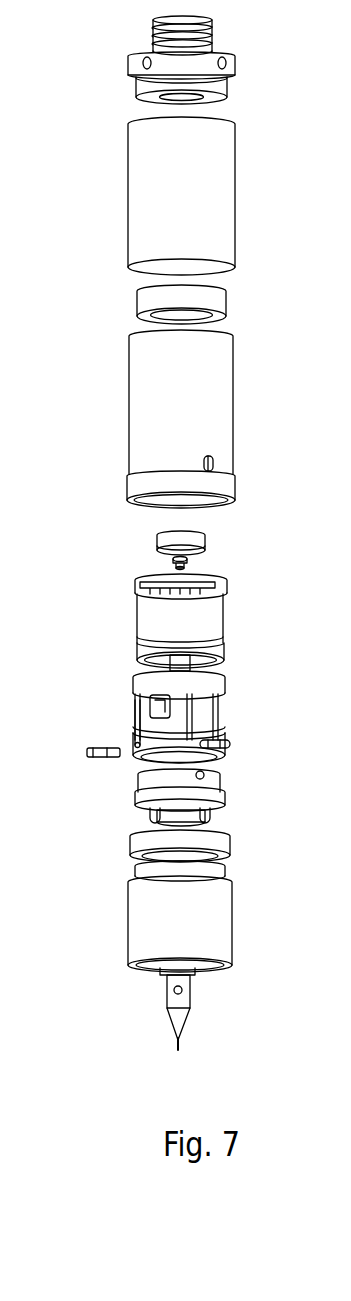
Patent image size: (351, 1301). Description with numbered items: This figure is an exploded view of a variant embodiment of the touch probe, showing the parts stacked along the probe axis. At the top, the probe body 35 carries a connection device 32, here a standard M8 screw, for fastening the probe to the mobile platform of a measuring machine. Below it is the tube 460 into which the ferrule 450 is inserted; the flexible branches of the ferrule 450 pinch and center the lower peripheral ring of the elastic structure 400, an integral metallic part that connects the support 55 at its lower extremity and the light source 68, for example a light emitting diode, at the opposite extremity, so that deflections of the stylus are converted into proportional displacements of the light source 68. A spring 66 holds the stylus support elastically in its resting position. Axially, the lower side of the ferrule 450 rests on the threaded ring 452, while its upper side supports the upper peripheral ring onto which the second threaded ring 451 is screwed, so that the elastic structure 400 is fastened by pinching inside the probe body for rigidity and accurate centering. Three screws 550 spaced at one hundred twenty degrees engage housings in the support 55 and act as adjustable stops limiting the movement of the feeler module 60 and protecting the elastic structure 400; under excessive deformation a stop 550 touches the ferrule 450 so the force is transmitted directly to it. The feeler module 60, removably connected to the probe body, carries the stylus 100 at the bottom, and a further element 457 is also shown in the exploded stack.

The connection device 32 is at (207, 23).
The probe body 35 is at (135, 193).
The second threaded ring 451 is at (217, 297).
The tube 460 is at (157, 364).
The spring 66 is at (203, 540).
The light source 68 is at (165, 559).
The elastic structure 400 is at (205, 629).
The ferrule 450 is at (155, 686).
The post 457 is at (140, 733).
The screws 550 is at (225, 745).
The support 55 is at (205, 797).
The threaded ring 452 is at (140, 840).
The feeler module 60 is at (205, 935).
The stylus 100 is at (182, 1010).